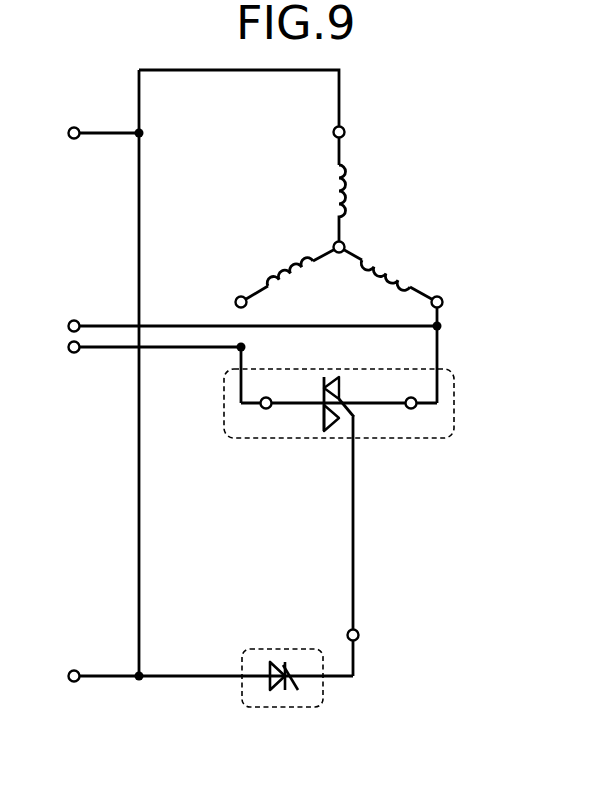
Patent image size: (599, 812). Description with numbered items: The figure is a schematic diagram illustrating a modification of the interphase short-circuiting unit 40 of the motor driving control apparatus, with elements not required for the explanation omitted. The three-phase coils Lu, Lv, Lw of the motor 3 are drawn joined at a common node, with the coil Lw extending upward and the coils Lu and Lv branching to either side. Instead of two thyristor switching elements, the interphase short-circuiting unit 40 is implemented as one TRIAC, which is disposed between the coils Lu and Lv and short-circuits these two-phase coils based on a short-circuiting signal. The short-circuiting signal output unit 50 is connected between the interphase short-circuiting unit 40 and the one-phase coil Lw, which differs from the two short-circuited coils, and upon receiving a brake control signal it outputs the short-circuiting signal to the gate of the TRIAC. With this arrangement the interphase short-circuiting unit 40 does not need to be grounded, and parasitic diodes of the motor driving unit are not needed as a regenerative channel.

The motor (stator windings Lu, Lv, Lw) 3 is at (424, 207).
The interphase short-circuiting unit 40 is at (455, 400).
The short-circuiting signal output unit 50 is at (277, 649).